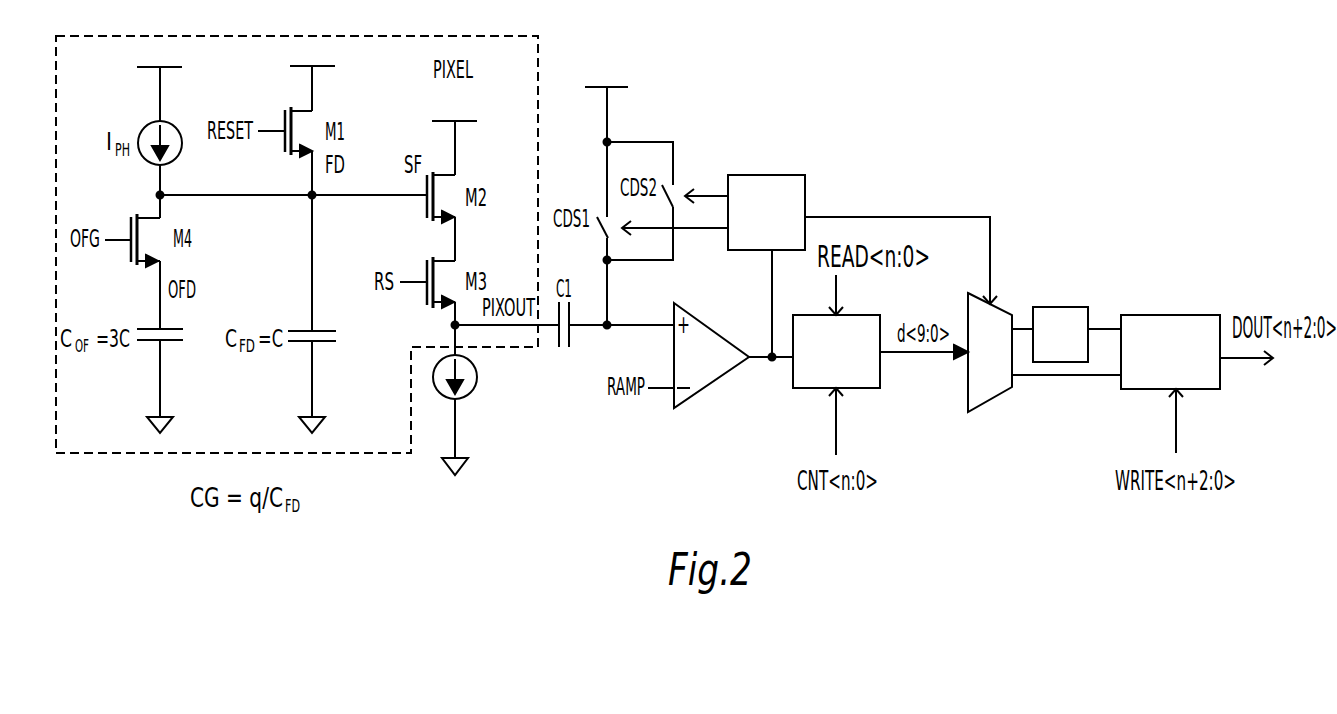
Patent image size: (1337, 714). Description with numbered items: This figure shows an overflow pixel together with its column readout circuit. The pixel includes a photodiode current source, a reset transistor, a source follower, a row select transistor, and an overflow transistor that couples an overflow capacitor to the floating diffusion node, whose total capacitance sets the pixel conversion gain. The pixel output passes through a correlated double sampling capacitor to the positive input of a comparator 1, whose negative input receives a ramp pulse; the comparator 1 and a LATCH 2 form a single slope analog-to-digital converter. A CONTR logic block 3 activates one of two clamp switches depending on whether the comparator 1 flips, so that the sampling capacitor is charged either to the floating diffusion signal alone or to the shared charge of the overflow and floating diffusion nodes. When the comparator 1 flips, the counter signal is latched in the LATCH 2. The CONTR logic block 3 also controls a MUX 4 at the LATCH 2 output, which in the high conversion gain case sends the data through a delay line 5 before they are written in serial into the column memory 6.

The comparator 1 is at (711, 355).
The LATCH 2 is at (836, 351).
The CONTR logic block 3 is at (766, 212).
The MUX 4 is at (990, 352).
The delay line 5 is at (1060, 334).
The column memory 6 is at (1170, 352).